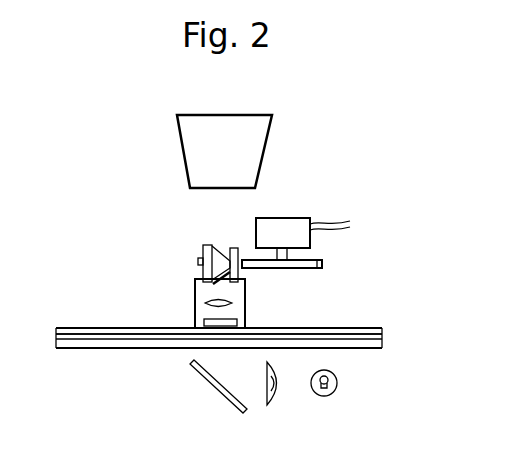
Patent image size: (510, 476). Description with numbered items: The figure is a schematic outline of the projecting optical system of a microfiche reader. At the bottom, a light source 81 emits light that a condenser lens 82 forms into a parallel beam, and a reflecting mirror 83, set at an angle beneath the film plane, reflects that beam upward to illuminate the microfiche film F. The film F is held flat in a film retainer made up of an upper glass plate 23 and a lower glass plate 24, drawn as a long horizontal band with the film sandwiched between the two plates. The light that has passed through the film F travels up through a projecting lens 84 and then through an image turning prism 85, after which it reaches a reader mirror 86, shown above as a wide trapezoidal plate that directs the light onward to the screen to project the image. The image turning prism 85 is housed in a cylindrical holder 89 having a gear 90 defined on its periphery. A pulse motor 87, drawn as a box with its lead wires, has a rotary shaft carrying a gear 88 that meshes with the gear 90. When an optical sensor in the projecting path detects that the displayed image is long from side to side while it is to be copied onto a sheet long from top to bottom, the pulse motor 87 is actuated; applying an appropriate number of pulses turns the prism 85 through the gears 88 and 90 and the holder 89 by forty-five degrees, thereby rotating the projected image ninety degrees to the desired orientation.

The reader mirror 86 is at (185, 132).
The pulse motor 87 is at (293, 225).
The gear 88 is at (322, 265).
The image turning prism 85 is at (222, 247).
The gear 90 is at (247, 260).
The cylindrical holder 89 is at (243, 274).
The projecting lens 84 is at (247, 308).
The microfiche film F is at (382, 330).
The lower glass plate 24 is at (92, 330).
The upper glass plate 23 is at (93, 352).
The reflecting mirror 83 is at (220, 397).
The condenser lens 82 is at (277, 393).
The light source 81 is at (337, 390).